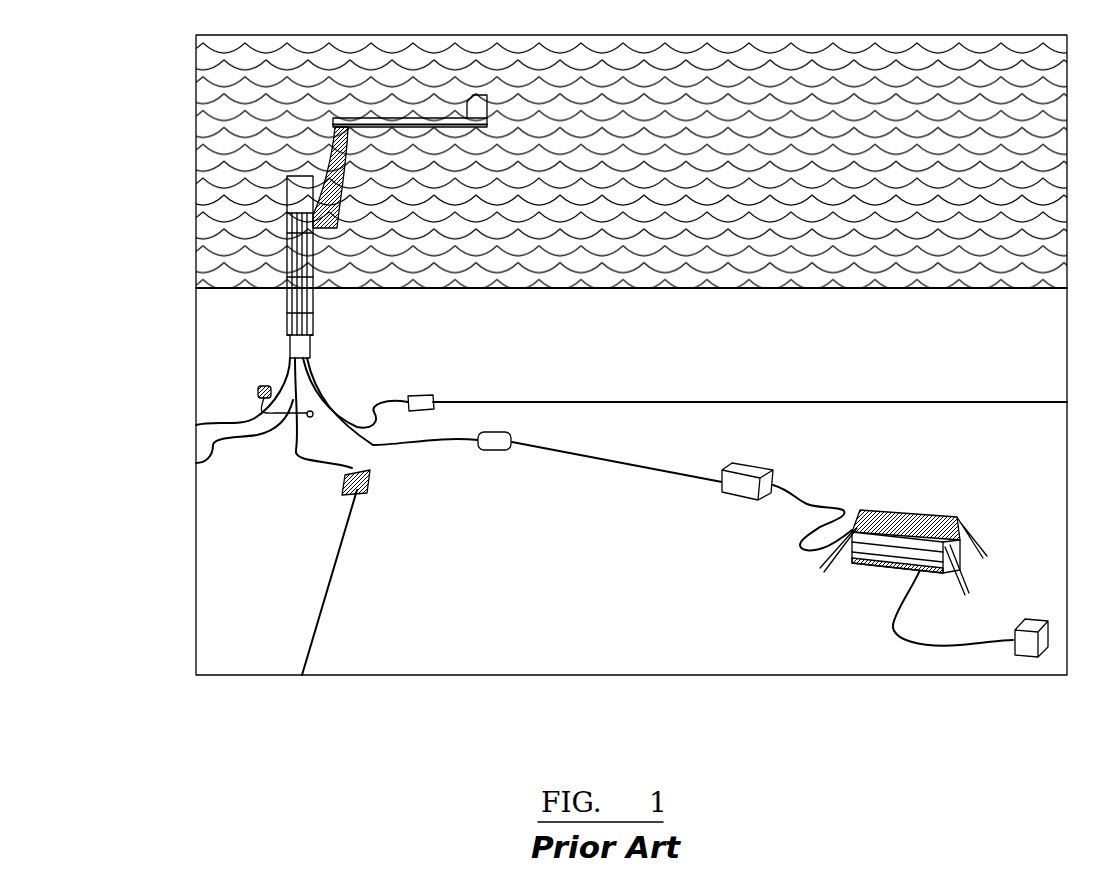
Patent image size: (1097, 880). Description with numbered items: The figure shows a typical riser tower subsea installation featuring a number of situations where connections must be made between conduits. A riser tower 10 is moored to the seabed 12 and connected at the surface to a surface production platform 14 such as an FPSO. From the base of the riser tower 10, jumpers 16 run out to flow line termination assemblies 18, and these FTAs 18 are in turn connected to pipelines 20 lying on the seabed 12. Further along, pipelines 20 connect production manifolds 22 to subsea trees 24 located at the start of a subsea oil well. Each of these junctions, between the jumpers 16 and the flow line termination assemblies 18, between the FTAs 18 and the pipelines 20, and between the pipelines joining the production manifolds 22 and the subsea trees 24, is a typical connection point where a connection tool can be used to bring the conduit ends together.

The riser tower 10 is at (287, 248).
The seabed 12 is at (232, 353).
The surface production platform 14 is at (347, 116).
The jumpers 16 is at (338, 422).
The flow line termination assemblies 18 is at (420, 395).
The pipelines 20 is at (630, 467).
The production manifolds 22 is at (912, 515).
The subsea trees 24 is at (1030, 645).